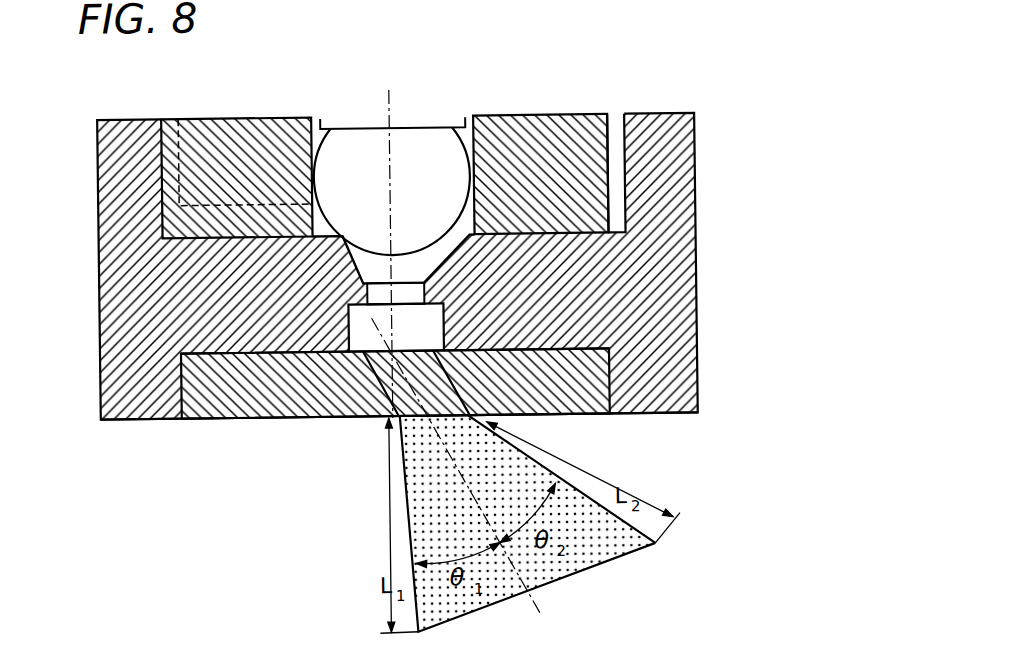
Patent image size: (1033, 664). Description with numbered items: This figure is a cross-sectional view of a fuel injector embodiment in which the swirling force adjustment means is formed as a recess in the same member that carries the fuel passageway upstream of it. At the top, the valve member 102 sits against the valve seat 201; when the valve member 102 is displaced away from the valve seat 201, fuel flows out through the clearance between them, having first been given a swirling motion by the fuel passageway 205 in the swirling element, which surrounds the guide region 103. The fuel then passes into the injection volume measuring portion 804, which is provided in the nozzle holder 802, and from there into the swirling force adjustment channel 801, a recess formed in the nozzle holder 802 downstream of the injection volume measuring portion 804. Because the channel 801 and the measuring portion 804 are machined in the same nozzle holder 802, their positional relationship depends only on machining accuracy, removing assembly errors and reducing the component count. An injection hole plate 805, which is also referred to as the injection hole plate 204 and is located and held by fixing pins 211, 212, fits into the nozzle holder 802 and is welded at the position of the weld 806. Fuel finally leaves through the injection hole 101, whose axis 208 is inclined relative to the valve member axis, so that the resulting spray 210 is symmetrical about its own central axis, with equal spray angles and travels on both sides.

The injection hole plate 805 is at (392, 110).
The valve member 102 is at (454, 173).
The ball guide member 103 is at (544, 212).
The valve seat 201 is at (443, 239).
The fuel passageway 205 is at (223, 210).
The injection volume measuring portion 804 is at (367, 290).
The swirling force adjustment channel 801 is at (367, 322).
The nozzle holder 802 is at (632, 370).
The fixing pin 211 is at (575, 400).
The fixing pin 212 is at (248, 401).
The injection hole plate 204 is at (206, 355).
The injection hole 101 is at (383, 418).
The weld 806 is at (608, 416).
The axis of the injection hole 208 is at (468, 417).
The spray 210 is at (429, 496).